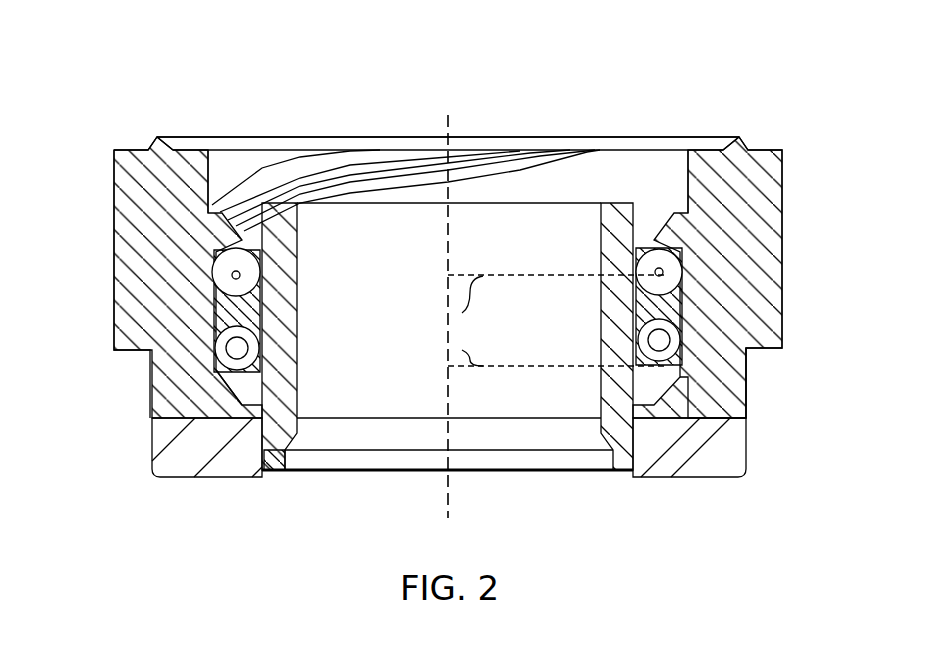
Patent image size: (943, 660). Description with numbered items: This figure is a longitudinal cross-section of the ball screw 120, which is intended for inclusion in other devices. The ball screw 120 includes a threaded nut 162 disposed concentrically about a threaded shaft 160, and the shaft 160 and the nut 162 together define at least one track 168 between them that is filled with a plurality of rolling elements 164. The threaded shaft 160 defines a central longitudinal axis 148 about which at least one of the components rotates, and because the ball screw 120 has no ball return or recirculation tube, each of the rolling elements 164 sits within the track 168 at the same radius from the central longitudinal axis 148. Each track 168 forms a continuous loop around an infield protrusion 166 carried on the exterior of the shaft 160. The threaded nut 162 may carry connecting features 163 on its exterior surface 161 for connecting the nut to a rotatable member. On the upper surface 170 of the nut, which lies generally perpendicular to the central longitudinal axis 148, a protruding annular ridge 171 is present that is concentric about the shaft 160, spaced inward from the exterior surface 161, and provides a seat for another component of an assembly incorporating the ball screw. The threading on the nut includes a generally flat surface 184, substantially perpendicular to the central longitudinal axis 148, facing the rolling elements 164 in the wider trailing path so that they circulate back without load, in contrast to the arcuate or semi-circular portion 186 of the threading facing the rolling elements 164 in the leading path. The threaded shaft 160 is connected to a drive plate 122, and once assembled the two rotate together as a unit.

The ball screw 120 is at (660, 58).
The drive plate 122 is at (727, 450).
The central longitudinal axis 148 is at (448, 505).
The threaded shaft 160 is at (603, 247).
The exterior surface 161 is at (746, 380).
The threaded nut 162 is at (118, 150).
The connecting features 163 is at (773, 283).
The rolling elements 164 is at (258, 353).
The infield protrusion 166 is at (655, 345).
The track 168 is at (245, 292).
The upper surface 170 is at (757, 150).
The protruding annular ridge 171 is at (157, 137).
The generally flat surface 184 is at (215, 370).
The arcuate or semi-circular portion 186 is at (268, 452).